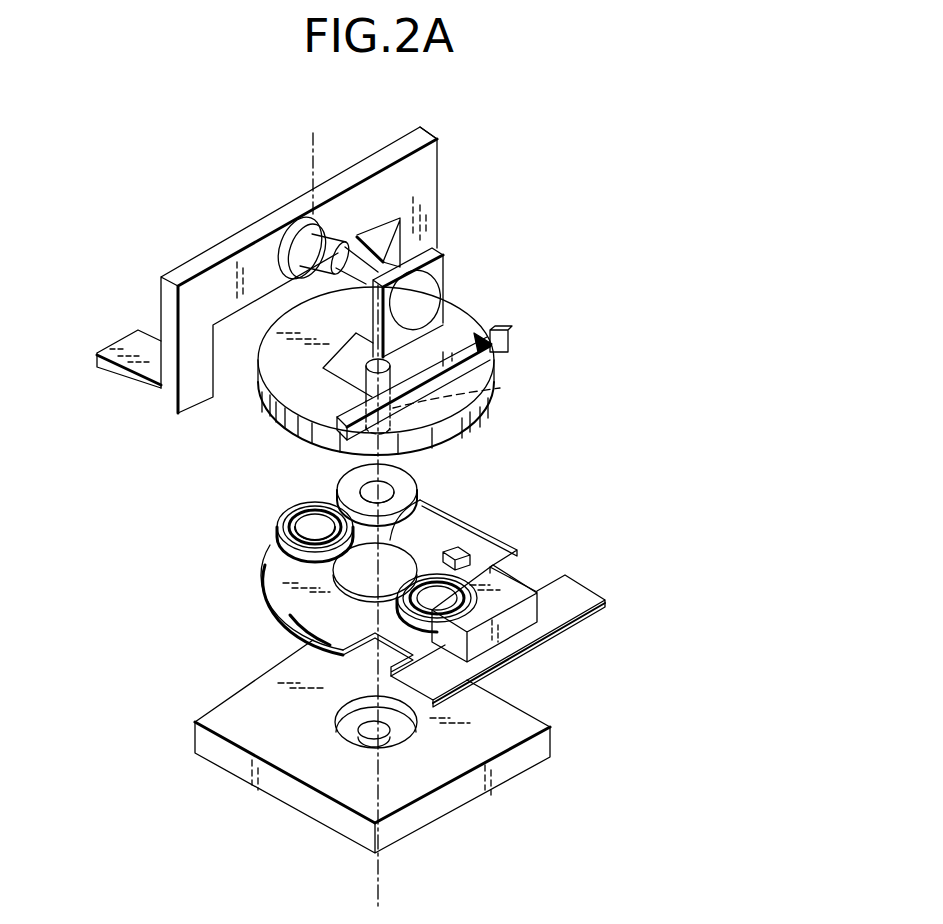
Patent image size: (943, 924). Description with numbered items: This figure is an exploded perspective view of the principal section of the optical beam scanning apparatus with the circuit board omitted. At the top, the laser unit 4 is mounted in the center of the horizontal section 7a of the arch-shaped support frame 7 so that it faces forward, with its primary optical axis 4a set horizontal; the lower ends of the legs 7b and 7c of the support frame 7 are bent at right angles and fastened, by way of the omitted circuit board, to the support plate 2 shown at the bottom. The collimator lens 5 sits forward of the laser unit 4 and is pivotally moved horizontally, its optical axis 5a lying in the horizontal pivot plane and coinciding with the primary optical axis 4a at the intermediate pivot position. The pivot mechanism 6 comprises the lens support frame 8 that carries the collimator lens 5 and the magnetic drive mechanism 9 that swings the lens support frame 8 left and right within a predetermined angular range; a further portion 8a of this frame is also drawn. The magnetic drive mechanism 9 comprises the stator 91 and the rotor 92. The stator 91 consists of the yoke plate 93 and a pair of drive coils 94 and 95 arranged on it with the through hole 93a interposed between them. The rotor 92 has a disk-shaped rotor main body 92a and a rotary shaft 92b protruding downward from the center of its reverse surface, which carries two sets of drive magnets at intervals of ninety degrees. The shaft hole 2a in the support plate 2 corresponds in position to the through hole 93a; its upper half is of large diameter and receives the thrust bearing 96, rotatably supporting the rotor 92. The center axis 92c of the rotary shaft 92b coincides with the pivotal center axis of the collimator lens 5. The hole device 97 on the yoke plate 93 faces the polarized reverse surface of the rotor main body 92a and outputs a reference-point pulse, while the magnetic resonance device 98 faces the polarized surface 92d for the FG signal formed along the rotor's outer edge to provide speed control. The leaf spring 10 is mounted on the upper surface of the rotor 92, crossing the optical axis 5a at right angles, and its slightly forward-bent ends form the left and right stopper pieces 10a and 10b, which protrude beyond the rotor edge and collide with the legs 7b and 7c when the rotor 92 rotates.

The support plate 2 is at (552, 730).
The shaft hole 2a is at (350, 727).
The laser unit 4 is at (310, 260).
The primary optical axis 4a is at (438, 243).
The collimator lens 5 is at (440, 284).
The optical axis of the collimator lens 5a is at (449, 321).
The pivot mechanism 6 is at (658, 399).
The support frame 7 is at (421, 126).
The horizontal section 7a is at (361, 198).
The leg 7b is at (188, 390).
The leg 7c is at (430, 172).
The lens support frame 8 is at (342, 319).
The keyway 8a is at (261, 367).
The magnetic drive mechanism 9 is at (240, 502).
The leaf spring 10 is at (468, 358).
The left stopper piece 10a is at (313, 430).
The right stopper piece 10b is at (507, 328).
The stator 91 is at (263, 580).
The rotor 92 is at (496, 372).
The rotor main body 92a is at (473, 418).
The rotary shaft 92b is at (497, 404).
The center axis 92c is at (380, 872).
The polarized surface for an FG signal 92d is at (267, 413).
The yoke plate 93 is at (581, 598).
The through hole 93a is at (398, 535).
The drive coil 94 is at (312, 615).
The drive coil 95 is at (278, 527).
The thrust bearing 96 is at (348, 484).
The hole device 97 is at (458, 548).
The magnetic resonance device 98 is at (528, 578).